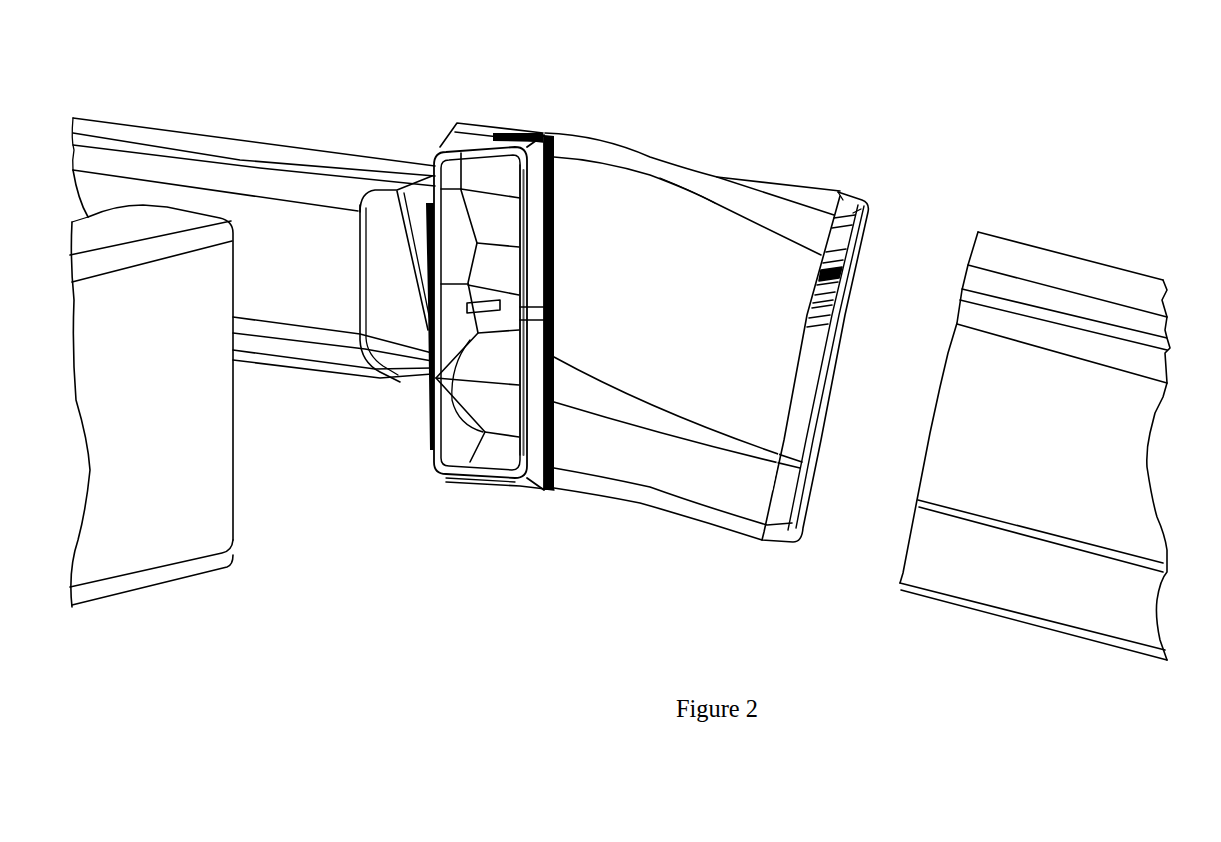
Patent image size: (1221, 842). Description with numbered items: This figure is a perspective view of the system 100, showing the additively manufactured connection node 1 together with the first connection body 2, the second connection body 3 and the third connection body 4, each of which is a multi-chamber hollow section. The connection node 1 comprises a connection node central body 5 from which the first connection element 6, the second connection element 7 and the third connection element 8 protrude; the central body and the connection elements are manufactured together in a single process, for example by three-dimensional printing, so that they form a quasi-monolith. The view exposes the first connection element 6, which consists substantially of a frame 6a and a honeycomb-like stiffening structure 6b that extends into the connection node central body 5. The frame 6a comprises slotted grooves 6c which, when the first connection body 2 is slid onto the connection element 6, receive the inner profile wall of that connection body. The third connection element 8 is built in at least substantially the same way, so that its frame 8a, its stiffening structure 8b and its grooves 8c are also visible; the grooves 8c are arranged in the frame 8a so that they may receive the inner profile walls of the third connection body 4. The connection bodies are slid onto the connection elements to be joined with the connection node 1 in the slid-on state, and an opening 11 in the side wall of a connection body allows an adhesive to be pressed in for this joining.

The system 100 is at (878, 72).
The connection node 1 is at (612, 133).
The first connection body 2 is at (220, 500).
The second connection body 3 is at (238, 150).
The third connection body 4 is at (1000, 250).
The connection node central body 5 is at (667, 197).
The first connection element 6 is at (432, 466).
The frame 6a is at (543, 140).
The honeycomb-like stiffening structure 6b is at (465, 478).
The slotted grooves 6c is at (555, 317).
The second connection element 7 is at (418, 166).
The third connection element 8 is at (798, 547).
The frame 8a is at (843, 218).
The stiffening structure 8b is at (840, 410).
The grooves 8c is at (856, 253).
The opening 11 is at (341, 295).